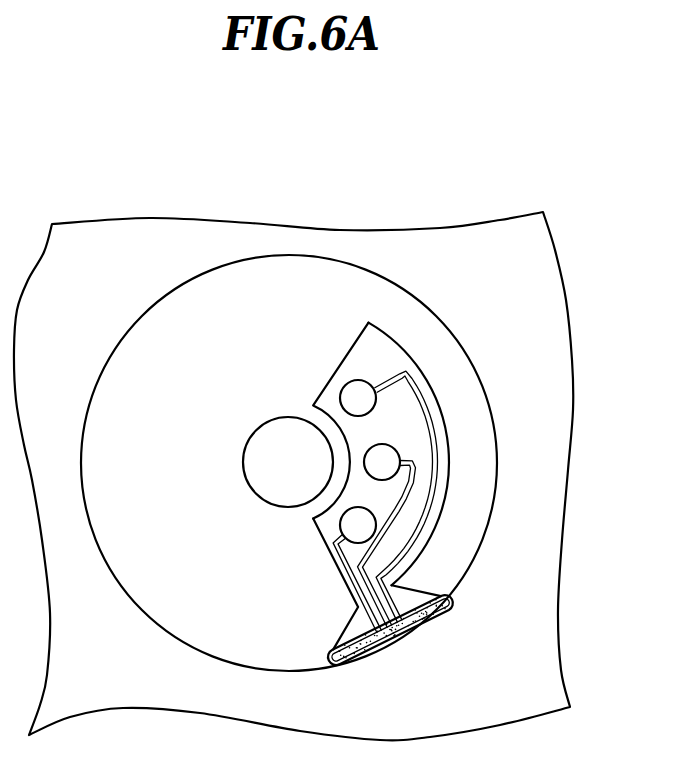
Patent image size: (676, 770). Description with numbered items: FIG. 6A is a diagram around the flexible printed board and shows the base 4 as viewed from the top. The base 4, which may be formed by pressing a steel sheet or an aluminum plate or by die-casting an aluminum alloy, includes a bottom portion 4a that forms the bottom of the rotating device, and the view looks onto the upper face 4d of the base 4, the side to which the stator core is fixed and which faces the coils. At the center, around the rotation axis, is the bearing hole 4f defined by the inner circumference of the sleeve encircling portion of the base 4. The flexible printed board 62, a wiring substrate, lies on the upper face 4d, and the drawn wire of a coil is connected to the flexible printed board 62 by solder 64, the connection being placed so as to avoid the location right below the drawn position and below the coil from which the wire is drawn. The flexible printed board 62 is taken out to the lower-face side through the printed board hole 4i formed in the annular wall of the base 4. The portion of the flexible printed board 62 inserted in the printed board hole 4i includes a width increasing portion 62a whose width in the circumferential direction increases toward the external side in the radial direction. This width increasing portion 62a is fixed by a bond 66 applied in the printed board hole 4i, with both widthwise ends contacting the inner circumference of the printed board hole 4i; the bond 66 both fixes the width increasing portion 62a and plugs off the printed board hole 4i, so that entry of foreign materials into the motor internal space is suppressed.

The base 4 is at (384, 252).
The bottom portion 4a is at (530, 613).
The upper face 4d is at (185, 307).
The bearing hole 4f is at (257, 462).
The printed board hole 4i is at (420, 607).
The flexible printed board 62 is at (383, 347).
The width increasing portion 62a is at (358, 630).
The solder 64 is at (353, 395).
The bond 66 is at (349, 668).